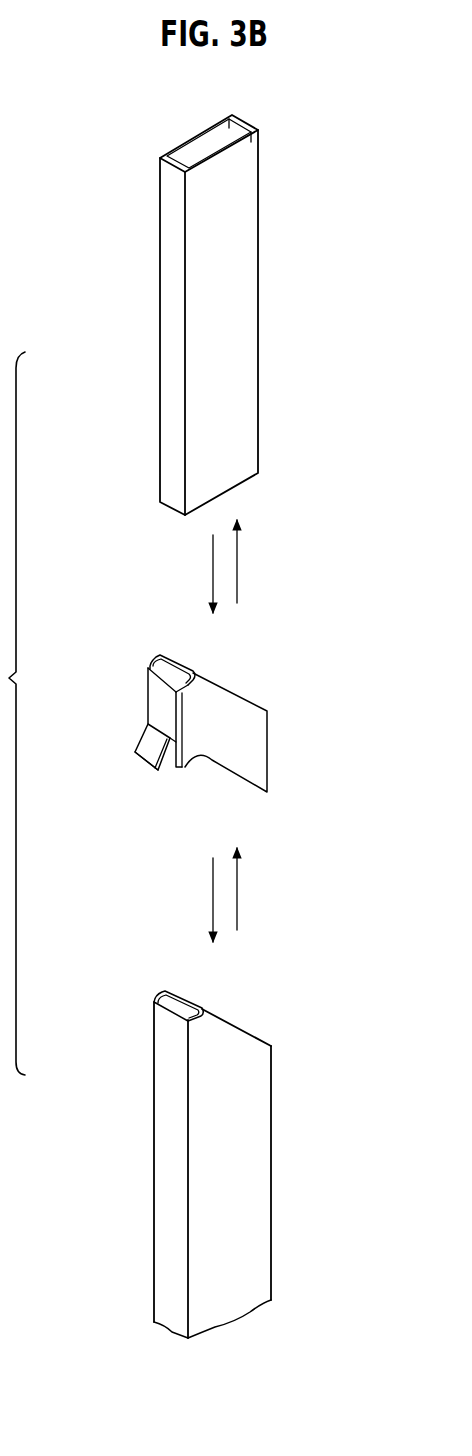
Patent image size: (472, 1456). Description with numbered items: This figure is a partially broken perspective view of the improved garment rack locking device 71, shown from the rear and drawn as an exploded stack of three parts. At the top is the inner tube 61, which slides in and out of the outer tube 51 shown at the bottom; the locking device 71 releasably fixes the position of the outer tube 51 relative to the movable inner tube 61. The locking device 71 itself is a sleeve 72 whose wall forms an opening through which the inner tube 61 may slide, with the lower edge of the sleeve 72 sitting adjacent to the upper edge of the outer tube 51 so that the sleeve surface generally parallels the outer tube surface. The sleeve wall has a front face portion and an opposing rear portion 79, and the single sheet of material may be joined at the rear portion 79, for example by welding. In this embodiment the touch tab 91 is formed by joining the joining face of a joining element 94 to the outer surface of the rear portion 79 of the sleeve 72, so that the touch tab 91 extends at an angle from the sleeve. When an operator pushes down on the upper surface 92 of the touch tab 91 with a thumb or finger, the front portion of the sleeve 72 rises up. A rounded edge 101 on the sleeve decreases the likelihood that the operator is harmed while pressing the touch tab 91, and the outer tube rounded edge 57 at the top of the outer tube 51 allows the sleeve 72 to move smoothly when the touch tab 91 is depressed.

The outer tube 51 is at (211, 1156).
The outer tube rounded edge 57 is at (165, 993).
The inner tube 61 is at (270, 403).
The locking device 71 is at (203, 695).
The sleeve 72 is at (272, 732).
The rear portion 79 is at (168, 708).
The touch tab 91 is at (148, 765).
The upper surface 92 is at (148, 738).
The joining element 94 is at (148, 693).
The rounded edge 101 is at (158, 657).